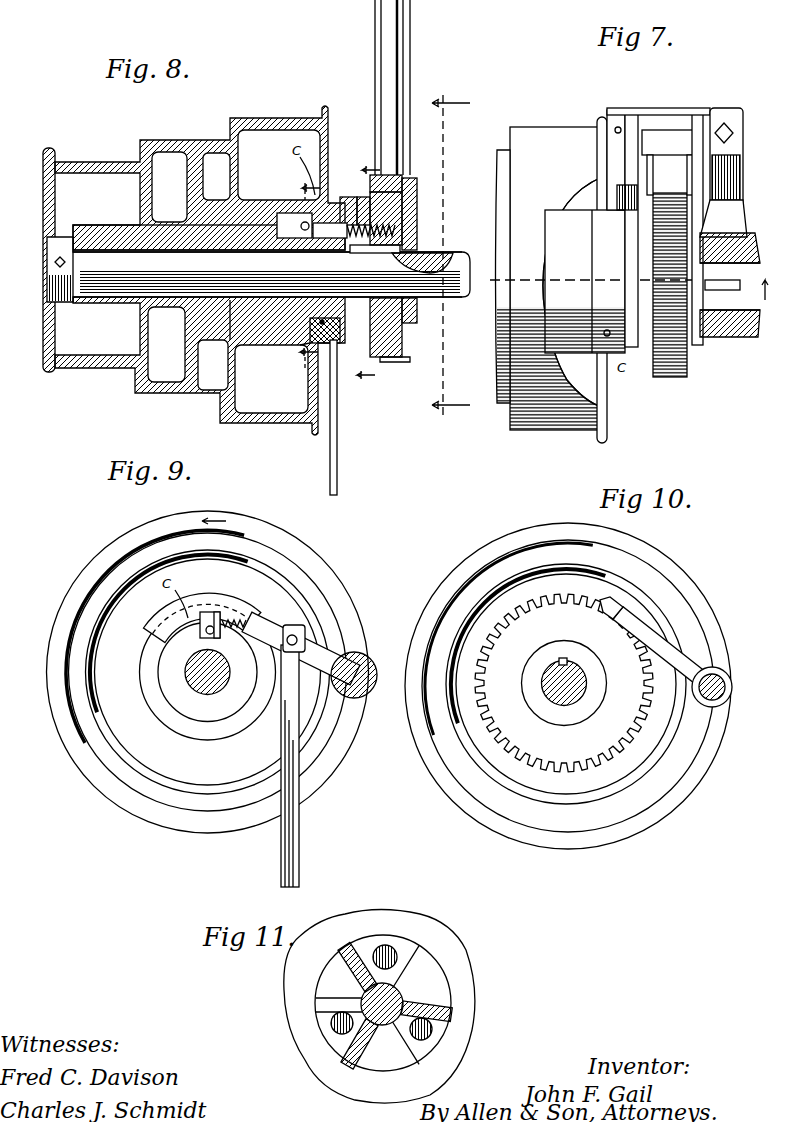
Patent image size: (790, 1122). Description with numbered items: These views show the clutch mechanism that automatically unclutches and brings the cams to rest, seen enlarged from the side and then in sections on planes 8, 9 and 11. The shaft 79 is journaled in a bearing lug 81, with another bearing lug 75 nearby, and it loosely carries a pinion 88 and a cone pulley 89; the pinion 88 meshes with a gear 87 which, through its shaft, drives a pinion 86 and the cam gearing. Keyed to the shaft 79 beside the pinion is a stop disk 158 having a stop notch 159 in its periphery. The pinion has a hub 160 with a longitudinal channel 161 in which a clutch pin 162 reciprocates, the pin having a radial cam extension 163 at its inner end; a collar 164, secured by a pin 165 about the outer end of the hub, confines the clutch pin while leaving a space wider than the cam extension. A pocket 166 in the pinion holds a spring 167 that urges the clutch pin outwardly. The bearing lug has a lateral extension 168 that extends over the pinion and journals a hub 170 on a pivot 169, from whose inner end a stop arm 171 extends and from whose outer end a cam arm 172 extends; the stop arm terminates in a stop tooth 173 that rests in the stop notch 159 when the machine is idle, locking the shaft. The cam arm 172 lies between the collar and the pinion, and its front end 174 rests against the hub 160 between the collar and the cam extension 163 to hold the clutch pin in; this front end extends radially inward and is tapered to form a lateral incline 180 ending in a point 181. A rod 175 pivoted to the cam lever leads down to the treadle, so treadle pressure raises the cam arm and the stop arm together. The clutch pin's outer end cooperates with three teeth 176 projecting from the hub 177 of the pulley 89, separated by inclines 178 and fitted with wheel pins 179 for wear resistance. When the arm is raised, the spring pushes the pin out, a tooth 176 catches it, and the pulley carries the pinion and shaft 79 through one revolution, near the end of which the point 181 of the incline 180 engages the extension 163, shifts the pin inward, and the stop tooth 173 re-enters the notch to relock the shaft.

In FIG. 8, the section plane 8— 8 is at (454, 250).
In FIG. 7, the section plane 8— 8 is at (770, 289).
In FIG. 8, the section plane 9— 9 is at (367, 275).
In FIG. 8, the section plane 11— 11 is at (308, 273).
In FIG. 7, the bearing lug 75 is at (739, 285).
In FIG. 8, the shaft 79 is at (452, 290).
In FIG. 9, the shaft 79 is at (207, 683).
In FIG. 10, the shaft 79 is at (556, 708).
In FIG. 11, the shaft 79 is at (360, 1005).
In FIG. 7, the bearing lug 81 is at (640, 272).
In FIG. 8, the pinion 86 is at (398, 362).
In FIG. 8, the gear 87 is at (375, 70).
In FIG. 7, the pinion 88 is at (668, 376).
In FIG. 8, the cone pulley 89 is at (252, 420).
In FIG. 7, the cone pulley 89 is at (540, 428).
In FIG. 9, the cone pulley 89 is at (118, 805).
In FIG. 10, the cone pulley 89 is at (628, 832).
In FIG. 8, the stop disk 158 is at (407, 267).
In FIG. 10, the stop disk 158 is at (564, 683).
In FIG. 10, the stop notch 159 is at (600, 603).
In FIG. 8, the hub 160 is at (337, 322).
In FIG. 8, the longitudinal channel 161 is at (347, 197).
In FIG. 8, the clutch pin 162 is at (354, 231).
In FIG. 9, the clutch pin 162 is at (190, 637).
In FIG. 8, the radial cam extension 163 is at (365, 197).
In FIG. 8, the collar 164 is at (297, 213).
In FIG. 8, the pin 165 is at (300, 345).
In FIG. 8, the pocket 166 is at (362, 252).
In FIG. 8, the spring 167 is at (400, 262).
In FIG. 9, the spring 167 is at (222, 636).
In FIG. 7, the lateral extension 168 is at (740, 170).
In FIG. 7, the pivot pin 169 is at (745, 128).
In FIG. 9, the pivot pin 169 is at (362, 660).
In FIG. 10, the pivot pin 169 is at (718, 700).
In FIG. 7, the hub 170 is at (670, 115).
In FIG. 9, the hub 170 is at (365, 692).
In FIG. 7, the stop arm 171 is at (700, 192).
In FIG. 10, the stop arm 171 is at (650, 640).
In FIG. 7, the cam arm 172 is at (642, 175).
In FIG. 10, the stop tooth 173 is at (605, 608).
In FIG. 9, the front end 174 is at (160, 633).
In FIG. 8, the rod 175 is at (338, 440).
In FIG. 9, the rod 175 is at (299, 820).
In FIG. 11, the teeth 176 is at (405, 948).
In FIG. 8, the hub 177 is at (245, 329).
In FIG. 11, the inclines 178 is at (335, 952).
In FIG. 8, the wheel pins 179 is at (290, 250).
In FIG. 11, the wheel pins 179 is at (387, 947).
In FIG. 9, the lateral incline 180 is at (236, 606).
In FIG. 9, the point 181 is at (250, 624).